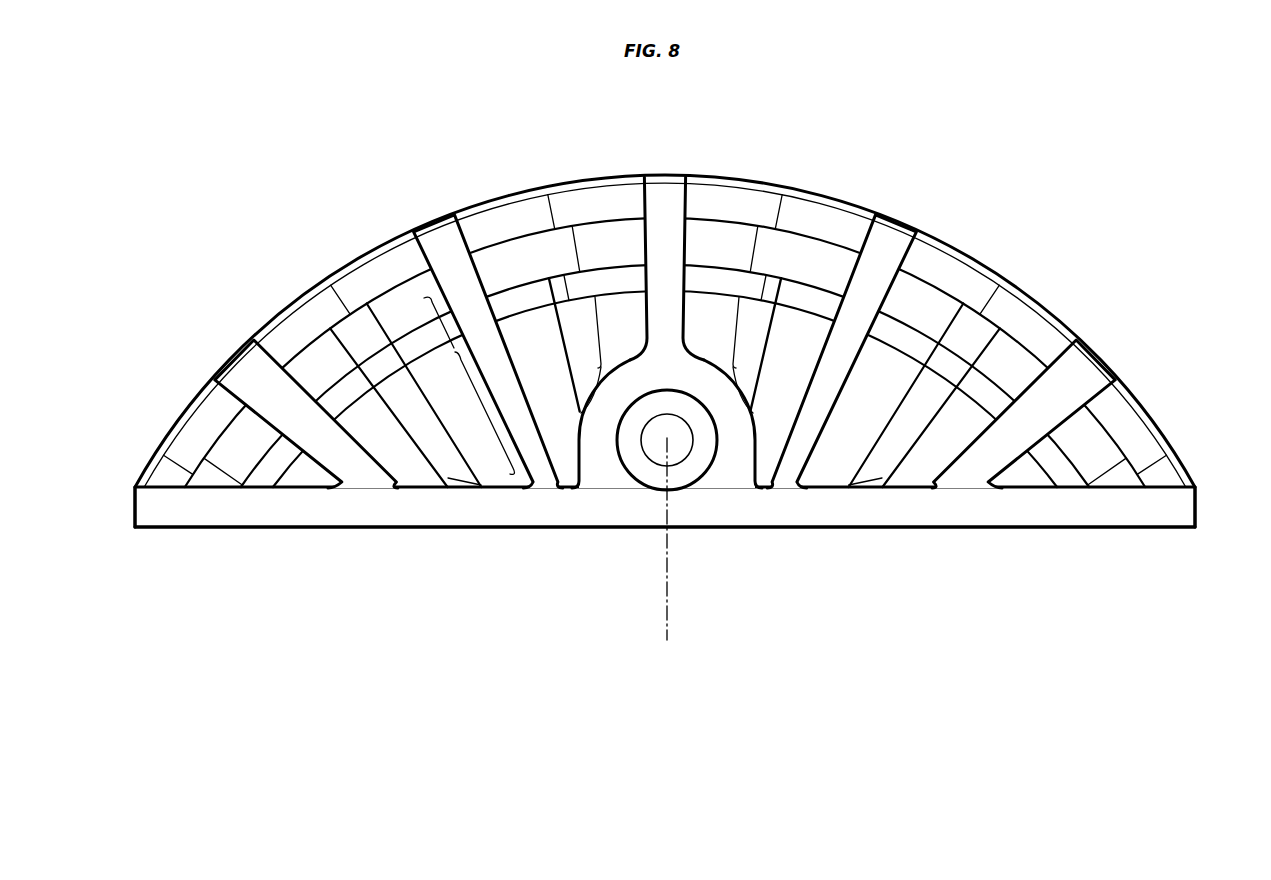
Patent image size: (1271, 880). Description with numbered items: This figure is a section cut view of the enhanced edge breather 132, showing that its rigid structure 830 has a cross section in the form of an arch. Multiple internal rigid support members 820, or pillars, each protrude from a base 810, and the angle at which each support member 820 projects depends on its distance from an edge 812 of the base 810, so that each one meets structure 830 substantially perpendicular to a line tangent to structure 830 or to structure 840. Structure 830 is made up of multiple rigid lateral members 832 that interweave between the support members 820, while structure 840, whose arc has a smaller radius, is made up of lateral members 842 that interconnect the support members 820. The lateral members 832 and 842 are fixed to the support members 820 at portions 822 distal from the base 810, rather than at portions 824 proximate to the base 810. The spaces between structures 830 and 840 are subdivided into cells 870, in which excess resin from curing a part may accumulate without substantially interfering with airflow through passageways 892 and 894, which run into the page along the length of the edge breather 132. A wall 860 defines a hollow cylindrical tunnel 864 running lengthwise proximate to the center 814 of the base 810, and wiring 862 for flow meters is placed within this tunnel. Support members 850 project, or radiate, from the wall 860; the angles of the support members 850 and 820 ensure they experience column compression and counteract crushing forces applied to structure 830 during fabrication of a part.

The edge breather 132 is at (862, 572).
The base 810 is at (560, 527).
The edge 812 is at (133, 522).
The center 814 is at (664, 553).
The support member 820 is at (504, 357).
The portion 822 is at (423, 321).
The portion 824 is at (482, 413).
The structure 830 is at (852, 182).
The lateral member 832 is at (748, 176).
The structure 840 is at (918, 305).
The lateral member 842 is at (803, 282).
The support member 850 is at (598, 336).
The wall 860 is at (577, 433).
The wiring 862 is at (688, 425).
The hollow cylindrical tunnel 864 is at (680, 480).
The cell 870 is at (491, 258).
The passageway 892 is at (853, 425).
The passageway 894 is at (432, 395).